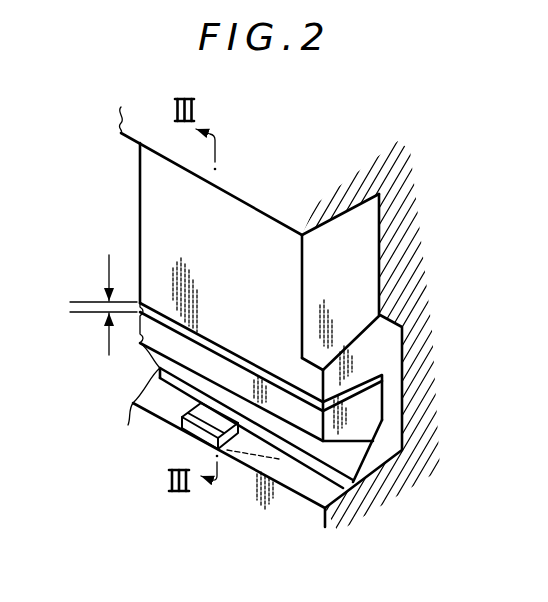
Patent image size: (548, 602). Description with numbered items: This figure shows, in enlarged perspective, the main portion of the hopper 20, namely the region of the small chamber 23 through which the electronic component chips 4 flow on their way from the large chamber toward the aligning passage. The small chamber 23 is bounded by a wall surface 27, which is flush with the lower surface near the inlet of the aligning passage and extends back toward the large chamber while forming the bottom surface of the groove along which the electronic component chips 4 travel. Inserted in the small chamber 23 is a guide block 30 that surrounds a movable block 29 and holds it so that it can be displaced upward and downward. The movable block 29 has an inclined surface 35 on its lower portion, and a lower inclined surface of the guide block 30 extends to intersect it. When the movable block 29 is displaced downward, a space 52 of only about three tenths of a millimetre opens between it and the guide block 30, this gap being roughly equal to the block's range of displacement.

The hopper 20 is at (409, 155).
The guide block 30 is at (137, 183).
The movable block 29 is at (146, 348).
The space 52 is at (108, 267).
The small chamber 23 is at (174, 408).
The electronic component chips 4 is at (183, 433).
The wall surface 27 is at (253, 461).
The inclined surface 35 is at (340, 480).